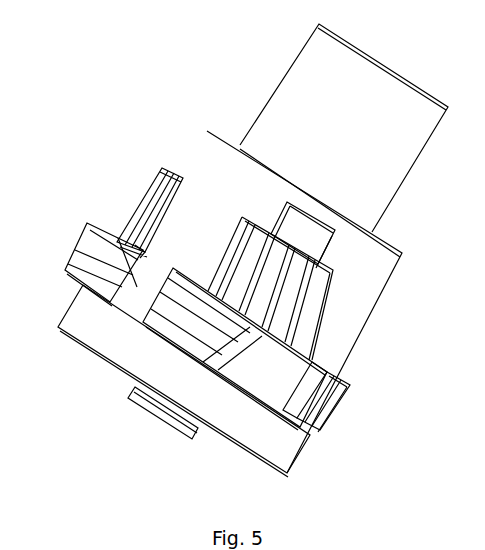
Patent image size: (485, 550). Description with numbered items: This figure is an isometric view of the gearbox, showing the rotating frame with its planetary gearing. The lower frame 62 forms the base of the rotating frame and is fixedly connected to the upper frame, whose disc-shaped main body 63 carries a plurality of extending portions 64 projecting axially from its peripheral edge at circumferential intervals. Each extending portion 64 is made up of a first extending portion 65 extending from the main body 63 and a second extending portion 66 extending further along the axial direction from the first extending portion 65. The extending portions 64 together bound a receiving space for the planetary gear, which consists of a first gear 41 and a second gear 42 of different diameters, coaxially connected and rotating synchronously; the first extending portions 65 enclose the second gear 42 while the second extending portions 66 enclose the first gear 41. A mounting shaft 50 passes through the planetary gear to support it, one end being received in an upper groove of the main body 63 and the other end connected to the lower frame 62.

The first gear 41 is at (340, 422).
The second gear 42 is at (300, 307).
The mounting shaft 50 is at (305, 232).
The lower frame 62 is at (108, 338).
The main body 63 is at (210, 153).
The extending portion 64 is at (62, 142).
The first extending portion 65 is at (173, 220).
The second extending portion 66 is at (87, 223).